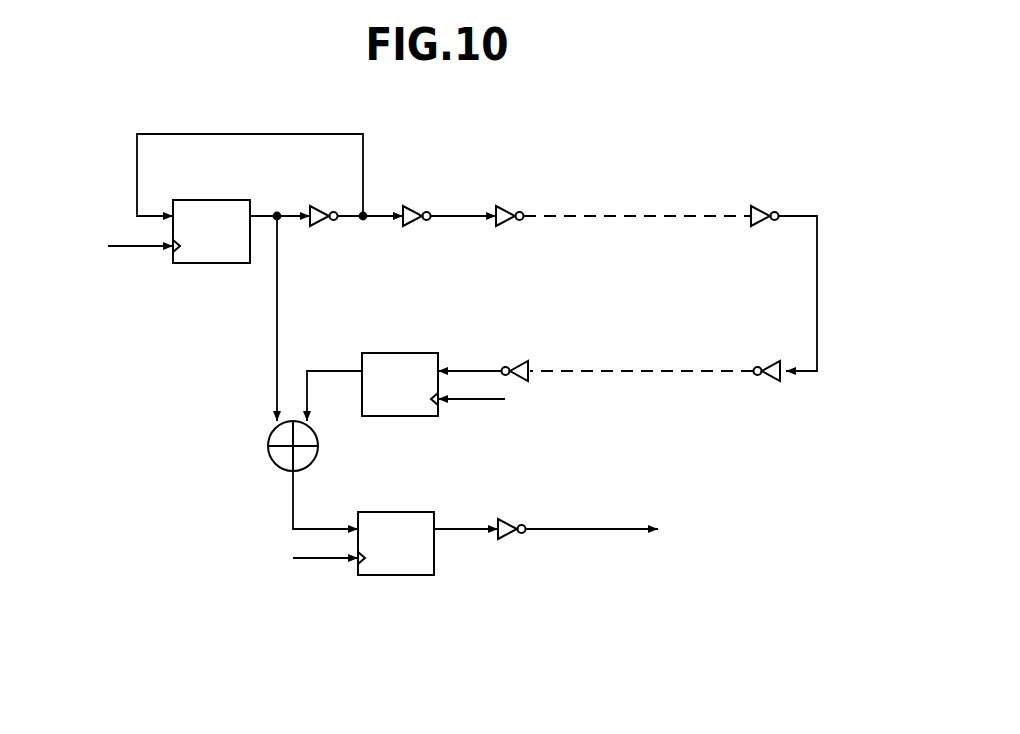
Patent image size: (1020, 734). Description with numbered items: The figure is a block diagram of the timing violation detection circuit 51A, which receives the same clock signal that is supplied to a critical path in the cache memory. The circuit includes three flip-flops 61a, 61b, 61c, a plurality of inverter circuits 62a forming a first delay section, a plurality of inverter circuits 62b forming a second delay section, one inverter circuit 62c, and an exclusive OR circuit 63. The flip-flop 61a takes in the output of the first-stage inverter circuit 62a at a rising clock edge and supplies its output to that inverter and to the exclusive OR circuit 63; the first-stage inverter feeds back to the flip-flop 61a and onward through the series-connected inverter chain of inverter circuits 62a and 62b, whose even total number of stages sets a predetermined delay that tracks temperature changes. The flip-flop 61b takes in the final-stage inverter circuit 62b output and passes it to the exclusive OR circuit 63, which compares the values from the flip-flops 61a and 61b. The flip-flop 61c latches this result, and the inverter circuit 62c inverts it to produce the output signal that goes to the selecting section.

The timing violation detection circuit 51A is at (206, 614).
The flip-flop 61a is at (214, 198).
The flip-flop 61b is at (403, 352).
The flip-flop 61c is at (401, 511).
The inverter circuits 62a is at (537, 189).
The inverter circuits 62b is at (643, 345).
The inverter circuit 62c is at (505, 519).
The exclusive OR circuit 63 is at (270, 437).